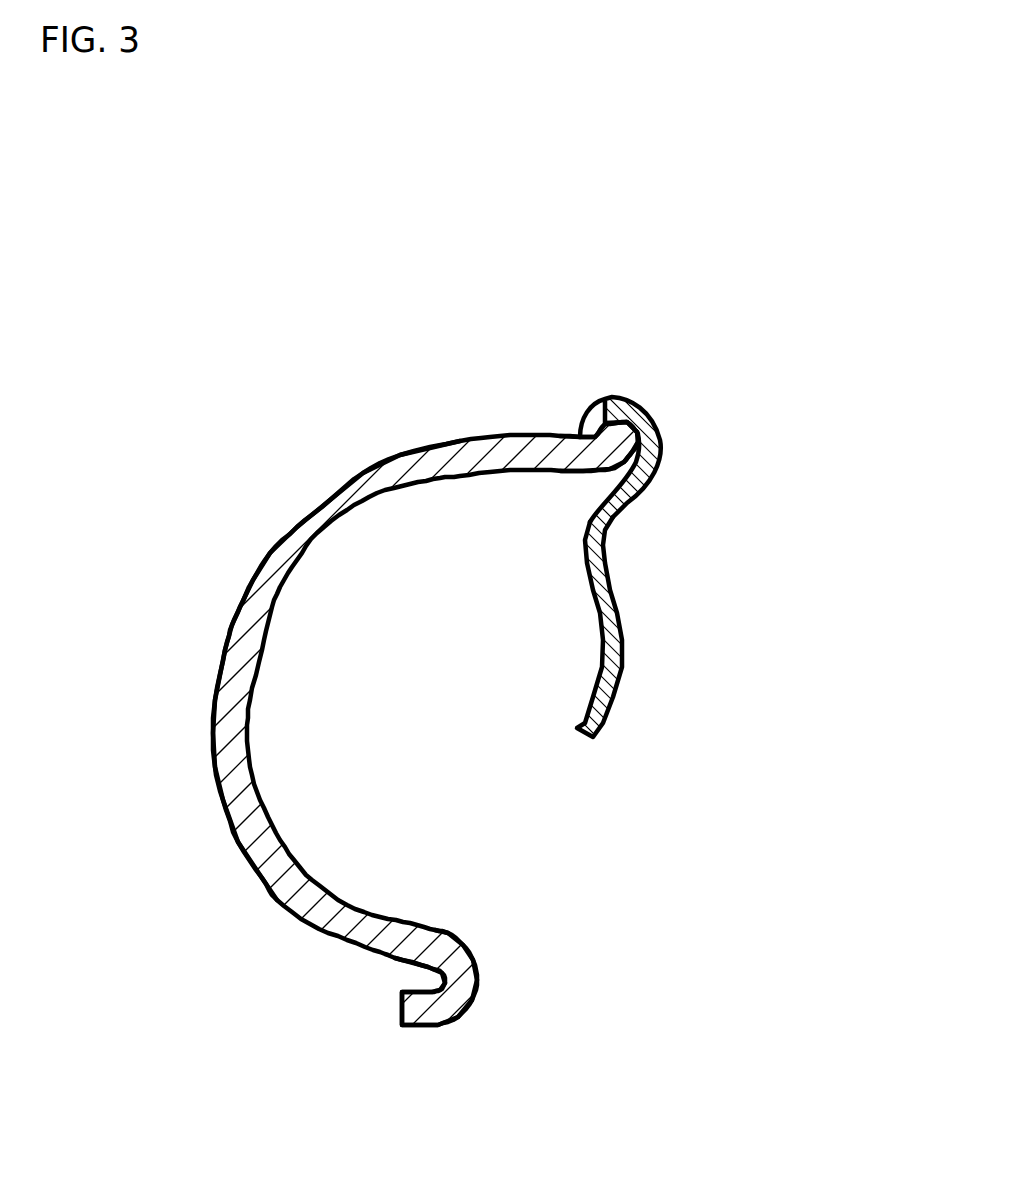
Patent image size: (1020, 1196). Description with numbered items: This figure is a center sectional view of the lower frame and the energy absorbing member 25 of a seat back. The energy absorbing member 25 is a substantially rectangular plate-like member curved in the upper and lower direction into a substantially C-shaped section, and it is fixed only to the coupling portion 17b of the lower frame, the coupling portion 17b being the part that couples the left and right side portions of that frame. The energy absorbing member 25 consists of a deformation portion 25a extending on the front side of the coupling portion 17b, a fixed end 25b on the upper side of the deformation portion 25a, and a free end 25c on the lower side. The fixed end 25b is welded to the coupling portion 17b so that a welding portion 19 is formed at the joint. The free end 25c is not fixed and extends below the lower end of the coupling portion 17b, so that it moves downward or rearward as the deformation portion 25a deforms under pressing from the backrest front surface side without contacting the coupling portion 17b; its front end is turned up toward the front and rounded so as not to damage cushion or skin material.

The energy absorbing member 25 is at (213, 280).
The deformation portion 25a is at (252, 585).
The fixed end 25b is at (559, 447).
The free end 25c is at (470, 980).
The welding portion 19 is at (592, 413).
The coupling portion 17b is at (612, 580).